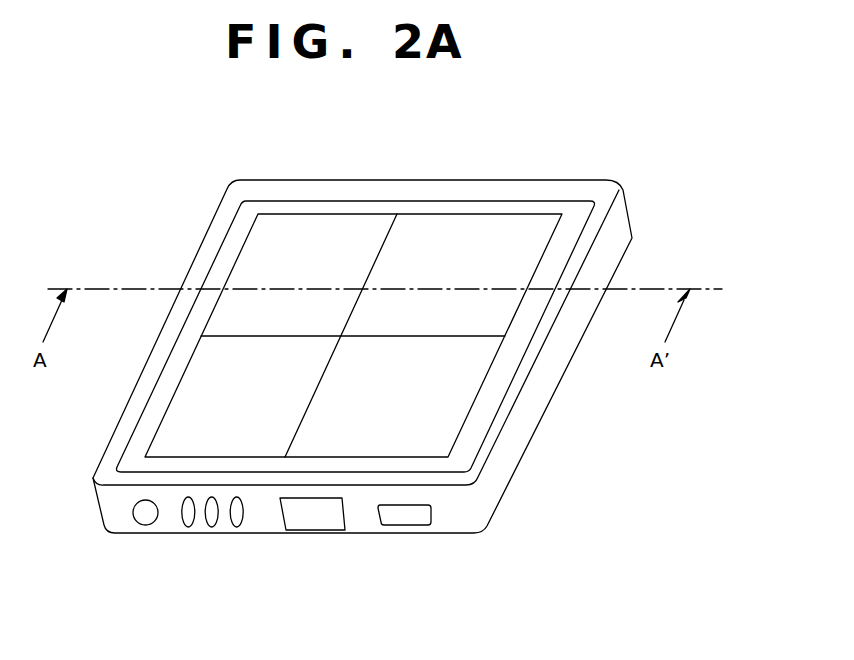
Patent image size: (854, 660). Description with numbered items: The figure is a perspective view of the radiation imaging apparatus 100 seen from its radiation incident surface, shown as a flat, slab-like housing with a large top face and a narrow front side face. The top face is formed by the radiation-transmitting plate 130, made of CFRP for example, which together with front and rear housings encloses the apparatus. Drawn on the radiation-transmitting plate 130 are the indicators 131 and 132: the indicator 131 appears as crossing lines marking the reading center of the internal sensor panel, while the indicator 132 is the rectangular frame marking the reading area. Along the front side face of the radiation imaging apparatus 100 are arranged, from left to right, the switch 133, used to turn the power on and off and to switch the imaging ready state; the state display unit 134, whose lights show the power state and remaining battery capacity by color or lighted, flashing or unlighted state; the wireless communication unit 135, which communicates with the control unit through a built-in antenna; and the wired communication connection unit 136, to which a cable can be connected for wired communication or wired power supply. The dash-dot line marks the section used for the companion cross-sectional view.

The radiation imaging apparatus 100 is at (169, 194).
The radiation-transmitting plate 130 is at (571, 222).
The indicator 131 is at (375, 262).
The indicator 132 is at (497, 217).
The switch 133 is at (143, 517).
The state display unit 134 is at (252, 537).
The wireless communication unit 135 is at (307, 518).
The wired communication connection unit 136 is at (407, 517).